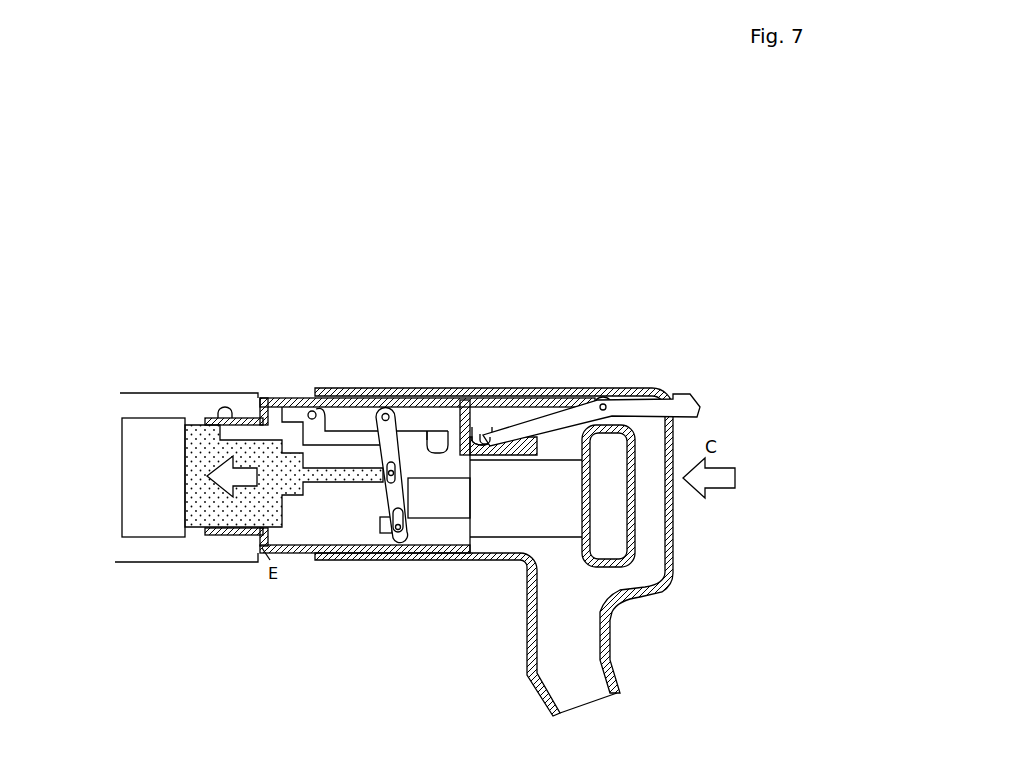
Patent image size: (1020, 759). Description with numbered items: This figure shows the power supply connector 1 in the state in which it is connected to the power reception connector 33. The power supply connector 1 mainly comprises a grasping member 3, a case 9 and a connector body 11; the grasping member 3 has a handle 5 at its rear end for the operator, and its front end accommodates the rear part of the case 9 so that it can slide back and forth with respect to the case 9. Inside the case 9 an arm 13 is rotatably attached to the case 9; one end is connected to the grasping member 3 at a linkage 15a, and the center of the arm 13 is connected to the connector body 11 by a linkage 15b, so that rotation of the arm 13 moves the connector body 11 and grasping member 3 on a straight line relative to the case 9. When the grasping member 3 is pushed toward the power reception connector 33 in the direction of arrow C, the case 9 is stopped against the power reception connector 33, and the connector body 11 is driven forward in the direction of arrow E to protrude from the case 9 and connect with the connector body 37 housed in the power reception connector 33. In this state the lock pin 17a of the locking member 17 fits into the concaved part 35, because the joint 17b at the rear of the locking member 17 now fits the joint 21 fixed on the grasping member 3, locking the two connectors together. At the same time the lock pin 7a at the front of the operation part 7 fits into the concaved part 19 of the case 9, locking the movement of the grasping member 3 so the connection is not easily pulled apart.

The power supply connector 1 is at (539, 186).
The grasping member 3 is at (322, 562).
The handle 5 is at (606, 520).
The operation part 7 is at (655, 388).
The lock pin 7a is at (506, 430).
The case 9 is at (278, 398).
The connector body 11 is at (245, 518).
The arm 13 is at (388, 492).
The linkage 15a is at (393, 534).
The linkage 15b is at (398, 465).
The locking member 17 is at (265, 398).
The lock pin 17a is at (235, 408).
The joint 17b is at (450, 440).
The concaved part 19 is at (485, 425).
The joint 21 is at (425, 440).
The power reception connector 33 is at (202, 557).
The concaved part 35 is at (207, 416).
The connector body 37 is at (128, 503).